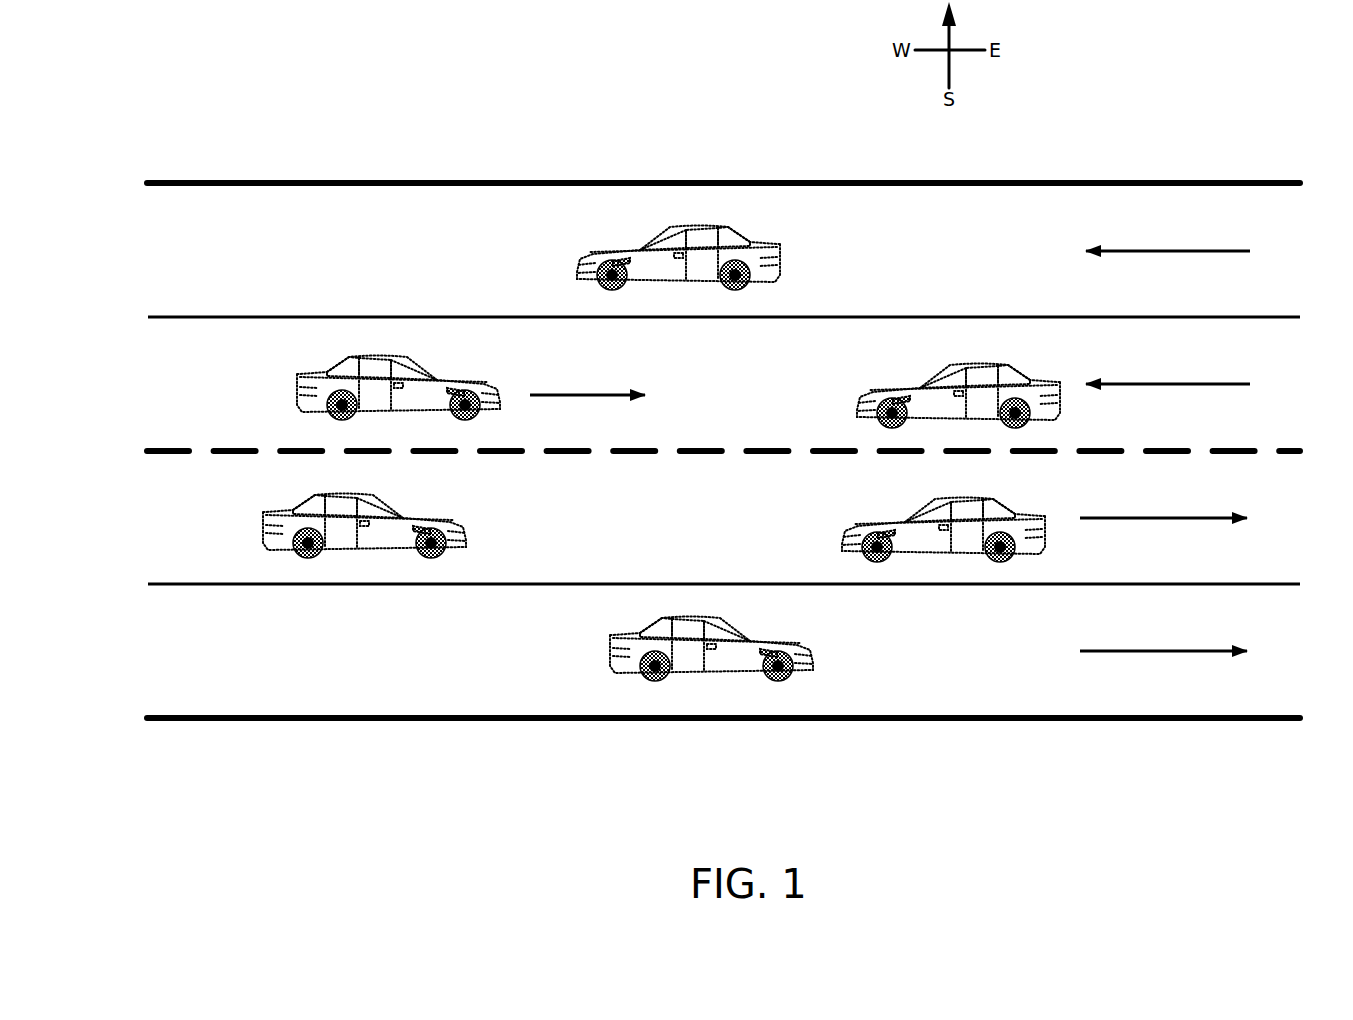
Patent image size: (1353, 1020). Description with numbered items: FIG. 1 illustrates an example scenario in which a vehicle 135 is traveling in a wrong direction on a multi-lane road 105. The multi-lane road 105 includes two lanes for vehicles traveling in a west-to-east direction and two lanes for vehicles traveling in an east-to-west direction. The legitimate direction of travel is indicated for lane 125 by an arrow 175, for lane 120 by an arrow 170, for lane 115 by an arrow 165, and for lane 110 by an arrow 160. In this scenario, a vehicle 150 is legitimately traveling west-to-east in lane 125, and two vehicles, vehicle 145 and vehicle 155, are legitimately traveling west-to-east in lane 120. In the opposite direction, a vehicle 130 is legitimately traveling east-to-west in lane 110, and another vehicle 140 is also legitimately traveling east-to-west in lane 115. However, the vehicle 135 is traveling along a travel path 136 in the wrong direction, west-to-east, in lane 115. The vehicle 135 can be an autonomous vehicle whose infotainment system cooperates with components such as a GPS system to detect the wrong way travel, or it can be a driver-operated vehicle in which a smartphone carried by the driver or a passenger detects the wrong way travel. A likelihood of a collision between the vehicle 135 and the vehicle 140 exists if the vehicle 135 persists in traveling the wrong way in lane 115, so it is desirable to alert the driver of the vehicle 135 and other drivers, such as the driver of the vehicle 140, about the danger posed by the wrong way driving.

The multi-lane road 105 is at (468, 150).
The lane 110 is at (130, 256).
The lane 115 is at (140, 380).
The lane 120 is at (130, 513).
The lane 125 is at (140, 645).
The vehicle 130 is at (602, 233).
The vehicle 135 is at (312, 363).
The travel path 136 is at (582, 394).
The vehicle 140 is at (887, 368).
The vehicle 145 is at (282, 495).
The vehicle 150 is at (597, 632).
The vehicle 155 is at (857, 504).
The arrow 160 is at (1150, 249).
The arrow 165 is at (1150, 382).
The arrow 170 is at (1148, 516).
The arrow 175 is at (1148, 649).